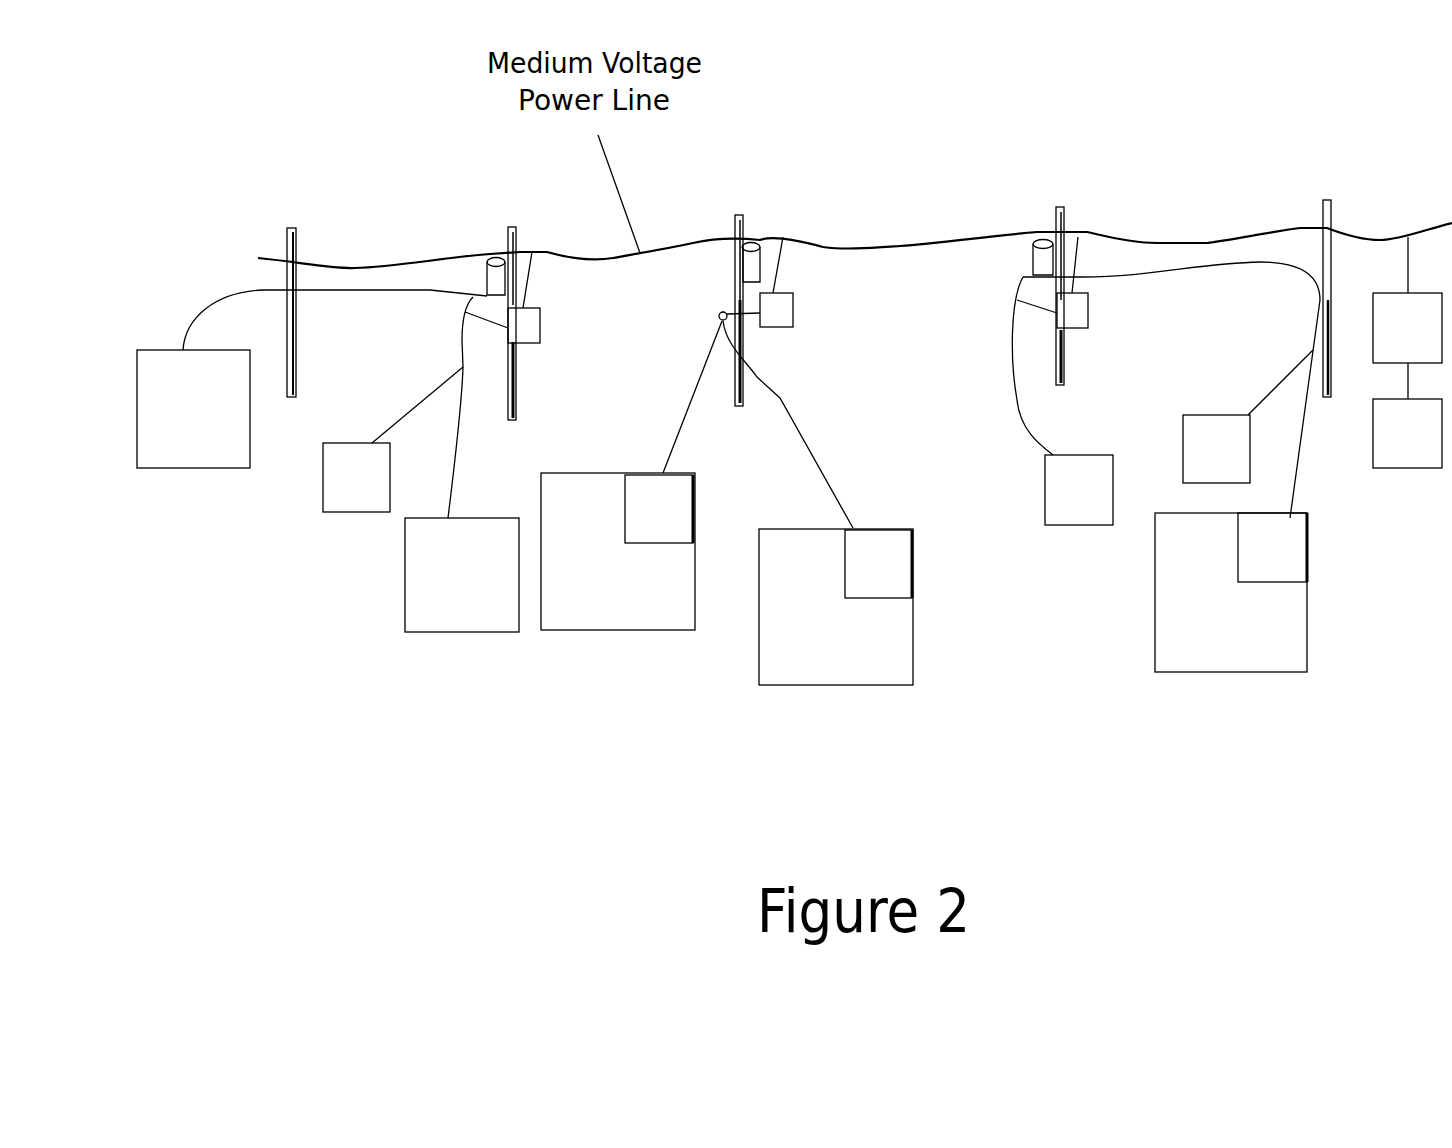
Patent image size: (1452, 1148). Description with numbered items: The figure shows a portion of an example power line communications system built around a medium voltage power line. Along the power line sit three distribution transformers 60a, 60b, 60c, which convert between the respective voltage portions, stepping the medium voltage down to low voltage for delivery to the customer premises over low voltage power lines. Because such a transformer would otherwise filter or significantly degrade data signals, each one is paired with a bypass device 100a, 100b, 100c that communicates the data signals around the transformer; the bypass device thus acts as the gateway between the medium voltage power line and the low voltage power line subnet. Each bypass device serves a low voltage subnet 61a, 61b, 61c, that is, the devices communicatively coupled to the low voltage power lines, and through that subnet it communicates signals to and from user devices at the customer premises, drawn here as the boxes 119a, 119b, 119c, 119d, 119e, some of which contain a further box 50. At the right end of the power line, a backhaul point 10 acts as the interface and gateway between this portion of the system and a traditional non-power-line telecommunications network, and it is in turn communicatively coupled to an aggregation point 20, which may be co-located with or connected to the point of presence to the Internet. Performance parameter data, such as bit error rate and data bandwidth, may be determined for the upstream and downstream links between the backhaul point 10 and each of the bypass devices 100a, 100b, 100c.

The backhaul point 10 is at (1407, 300).
The aggregation point 20 is at (1407, 415).
The repeater / bypass device 50 is at (966, 536).
The transformer 60a is at (1040, 196).
The transformer 60b is at (747, 211).
The transformer 60c is at (495, 224).
The low voltage subnet 61a is at (1176, 612).
The low voltage subnet 61b is at (727, 640).
The low voltage subnet 61c is at (328, 575).
The bypass device 100a is at (1088, 307).
The bypass device 100b is at (780, 313).
The bypass device 100c is at (525, 325).
The customer premises 119a is at (1231, 592).
The customer premises 119b is at (836, 607).
The customer premises 119c is at (462, 575).
The customer premises 119d is at (618, 551).
The customer premises 119e is at (193, 409).